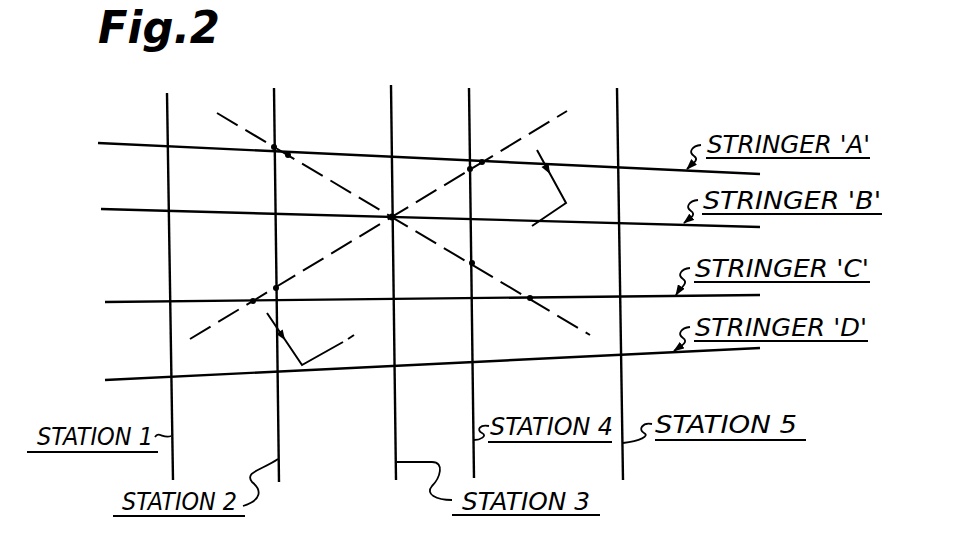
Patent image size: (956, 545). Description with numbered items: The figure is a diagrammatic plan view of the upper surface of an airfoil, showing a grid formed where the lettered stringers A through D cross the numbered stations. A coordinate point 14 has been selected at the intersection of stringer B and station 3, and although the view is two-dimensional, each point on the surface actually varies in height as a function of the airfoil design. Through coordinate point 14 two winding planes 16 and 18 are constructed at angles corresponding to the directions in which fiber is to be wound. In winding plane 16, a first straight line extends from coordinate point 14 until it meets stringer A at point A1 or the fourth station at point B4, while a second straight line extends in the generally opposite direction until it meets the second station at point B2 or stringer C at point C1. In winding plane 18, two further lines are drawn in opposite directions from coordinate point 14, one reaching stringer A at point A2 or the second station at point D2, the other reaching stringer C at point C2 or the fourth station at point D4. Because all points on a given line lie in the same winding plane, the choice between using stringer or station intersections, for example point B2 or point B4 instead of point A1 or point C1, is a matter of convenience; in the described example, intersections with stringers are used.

The coordinate point 14 is at (373, 249).
The winding plane 16 is at (240, 318).
The winding plane 18 is at (333, 186).
The station 3 is at (416, 257).
The point A1 is at (484, 158).
The point A2 is at (293, 153).
The point B2 is at (278, 285).
The point B4 is at (471, 171).
The point C1 is at (254, 297).
The point C2 is at (528, 302).
The point D2 is at (274, 140).
The point D4 is at (477, 264).